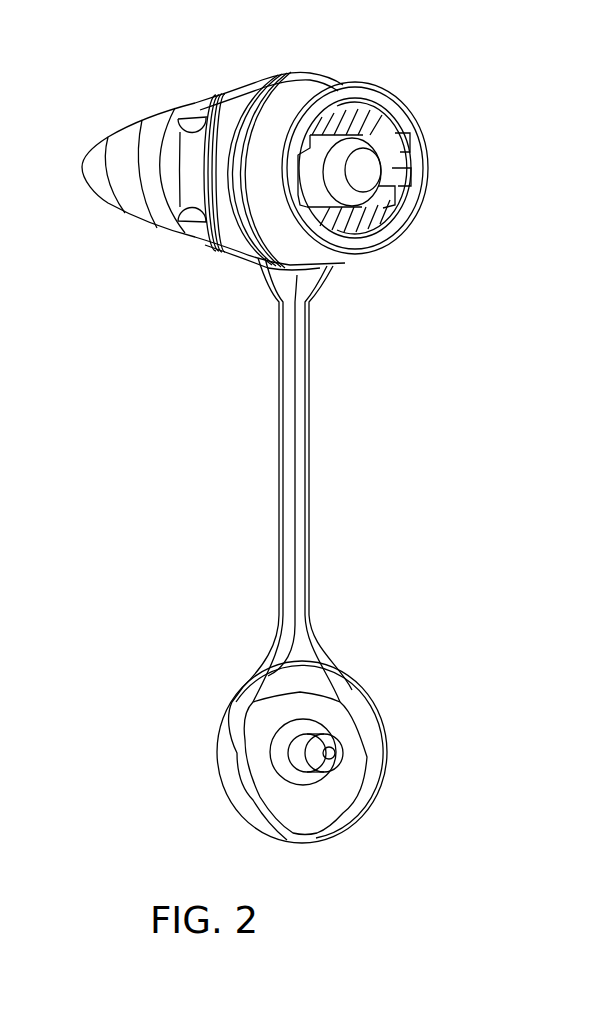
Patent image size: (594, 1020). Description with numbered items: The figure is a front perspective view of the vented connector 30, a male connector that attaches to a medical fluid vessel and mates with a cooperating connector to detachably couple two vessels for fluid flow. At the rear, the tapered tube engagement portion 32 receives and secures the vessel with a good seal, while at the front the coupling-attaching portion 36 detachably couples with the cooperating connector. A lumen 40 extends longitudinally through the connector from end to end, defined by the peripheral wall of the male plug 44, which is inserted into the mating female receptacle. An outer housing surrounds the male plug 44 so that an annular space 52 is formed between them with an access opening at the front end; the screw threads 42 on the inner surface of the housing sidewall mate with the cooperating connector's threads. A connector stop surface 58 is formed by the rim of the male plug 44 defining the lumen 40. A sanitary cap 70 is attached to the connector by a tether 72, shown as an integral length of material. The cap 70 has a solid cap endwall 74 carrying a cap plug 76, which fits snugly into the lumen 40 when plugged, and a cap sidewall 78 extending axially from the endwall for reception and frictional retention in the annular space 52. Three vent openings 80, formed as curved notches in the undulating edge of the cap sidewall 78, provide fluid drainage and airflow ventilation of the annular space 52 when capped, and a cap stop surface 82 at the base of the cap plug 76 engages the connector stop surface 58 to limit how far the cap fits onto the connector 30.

The vented connector 30 is at (256, 434).
The tube engagement portion 32 is at (183, 163).
The coupling-attaching portion 36 is at (386, 145).
The lumen 40 is at (395, 156).
The screw threads 42 is at (371, 153).
The male plug 44 is at (439, 159).
The annular space 52 is at (368, 242).
The connector stop surface 58 is at (387, 192).
The sanitary cap 70 is at (327, 480).
The tether 72 is at (338, 475).
The cap endwall 74 is at (310, 728).
The cap plug 76 is at (353, 739).
The cap sidewall 78 is at (276, 728).
The vent openings 80 is at (252, 744).
The cap stop surface 82 is at (273, 750).